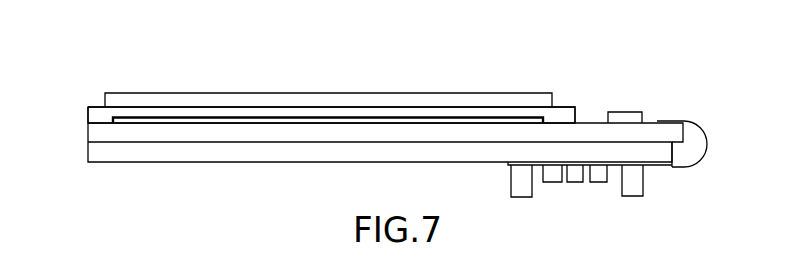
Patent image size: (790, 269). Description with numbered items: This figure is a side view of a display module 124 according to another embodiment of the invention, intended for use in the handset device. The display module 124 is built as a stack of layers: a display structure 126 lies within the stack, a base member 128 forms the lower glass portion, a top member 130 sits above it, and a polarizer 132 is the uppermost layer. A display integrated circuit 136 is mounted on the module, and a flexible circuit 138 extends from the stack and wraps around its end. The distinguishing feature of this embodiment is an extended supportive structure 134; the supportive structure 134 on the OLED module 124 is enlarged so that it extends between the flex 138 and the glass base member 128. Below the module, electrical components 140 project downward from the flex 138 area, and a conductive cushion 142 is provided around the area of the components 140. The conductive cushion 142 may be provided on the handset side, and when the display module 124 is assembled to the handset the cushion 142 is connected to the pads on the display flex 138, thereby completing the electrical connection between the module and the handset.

The display module 124 is at (172, 40).
The display structure 126 is at (530, 120).
The base member 128 is at (92, 130).
The top member 130 is at (88, 112).
The polarizer 132 is at (493, 95).
The extended supportive structure 134 is at (645, 153).
The display integrated circuit 136 is at (628, 117).
The flexible circuit 138 is at (707, 156).
The electrical components 140 is at (598, 178).
The conductive cushion 142 is at (637, 192).